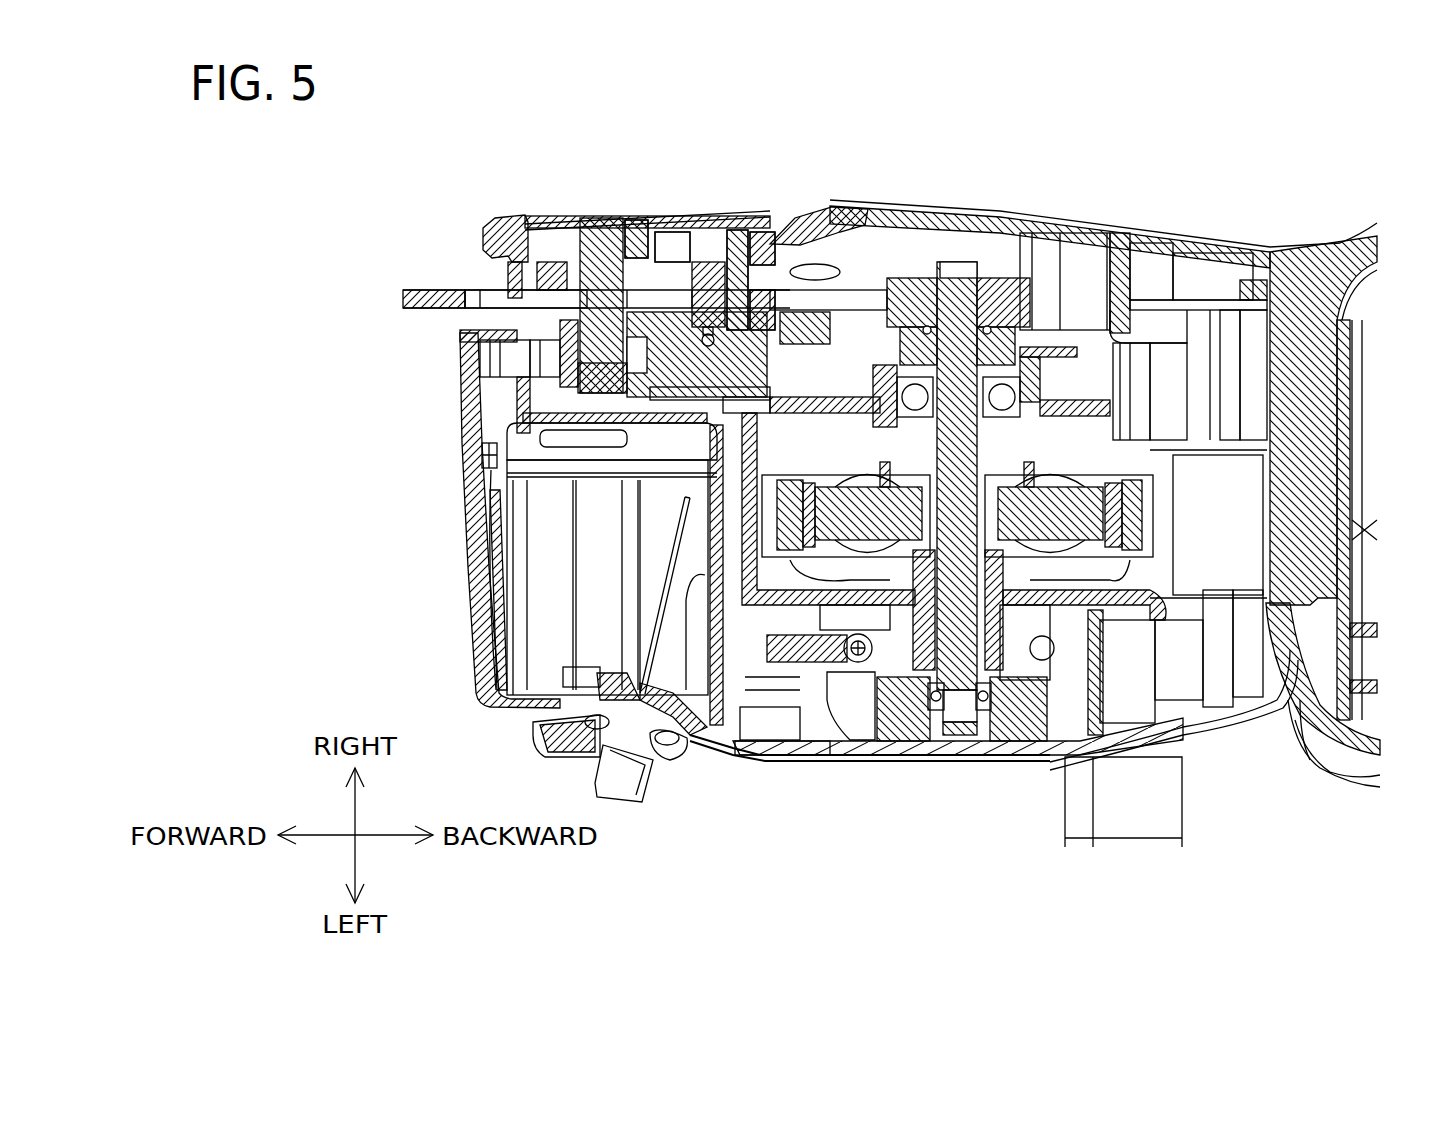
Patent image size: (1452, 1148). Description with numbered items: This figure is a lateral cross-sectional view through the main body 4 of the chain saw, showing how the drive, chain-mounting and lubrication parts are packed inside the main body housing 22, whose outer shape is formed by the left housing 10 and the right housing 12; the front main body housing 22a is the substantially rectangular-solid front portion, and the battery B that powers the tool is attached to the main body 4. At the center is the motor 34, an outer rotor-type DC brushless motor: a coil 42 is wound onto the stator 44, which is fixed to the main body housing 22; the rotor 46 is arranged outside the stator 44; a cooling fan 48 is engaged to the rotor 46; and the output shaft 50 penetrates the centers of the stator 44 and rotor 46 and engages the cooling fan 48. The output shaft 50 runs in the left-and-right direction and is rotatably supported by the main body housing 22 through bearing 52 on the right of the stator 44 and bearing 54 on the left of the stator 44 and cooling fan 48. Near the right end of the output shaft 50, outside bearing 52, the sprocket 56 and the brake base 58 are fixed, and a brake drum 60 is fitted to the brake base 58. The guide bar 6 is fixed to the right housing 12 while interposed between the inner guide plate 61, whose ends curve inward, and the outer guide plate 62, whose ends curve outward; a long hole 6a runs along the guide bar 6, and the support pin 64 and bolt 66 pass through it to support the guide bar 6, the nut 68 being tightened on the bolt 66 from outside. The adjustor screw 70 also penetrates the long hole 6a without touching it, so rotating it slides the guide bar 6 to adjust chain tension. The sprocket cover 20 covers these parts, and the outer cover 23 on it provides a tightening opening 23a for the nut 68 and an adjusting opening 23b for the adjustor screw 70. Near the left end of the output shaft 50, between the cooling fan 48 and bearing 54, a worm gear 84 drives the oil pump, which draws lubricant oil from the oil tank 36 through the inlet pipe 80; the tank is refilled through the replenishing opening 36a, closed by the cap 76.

The main body 4 is at (1277, 152).
The guide bar 6 is at (420, 292).
The long hole 6a is at (488, 297).
The left housing 10 is at (765, 747).
The right housing 12 is at (473, 380).
The sprocket cover 20 is at (887, 322).
The main body housing 22 is at (973, 750).
The front main body housing 22a is at (845, 750).
The outer cover 23 is at (783, 268).
The tightening opening 23a is at (643, 230).
The adjusting opening 23b is at (717, 288).
The motor 34 is at (892, 707).
The oil tank 36 is at (540, 546).
The replenishing opening 36a is at (653, 760).
The coil 42 is at (1140, 305).
The stator 44 is at (1180, 330).
The rotor 46 is at (1250, 500).
The cooling fan 48 is at (1180, 623).
The output shaft 50 is at (1000, 278).
The bearing 52 is at (948, 268).
The bearing 54 is at (937, 707).
The sprocket 56 is at (1010, 300).
The brake base 58 is at (1040, 320).
The brake drum 60 is at (1060, 352).
The inner guide plate 61 is at (848, 318).
The outer guide plate 62 is at (810, 265).
The support pin 64 is at (745, 298).
The bolt 66 is at (610, 230).
The nut 68 is at (580, 230).
The adjustor screw 70 is at (705, 330).
The cap 76 is at (607, 795).
The inlet pipe 80 is at (795, 748).
The worm gear 84 is at (1013, 743).
The battery B is at (1310, 760).